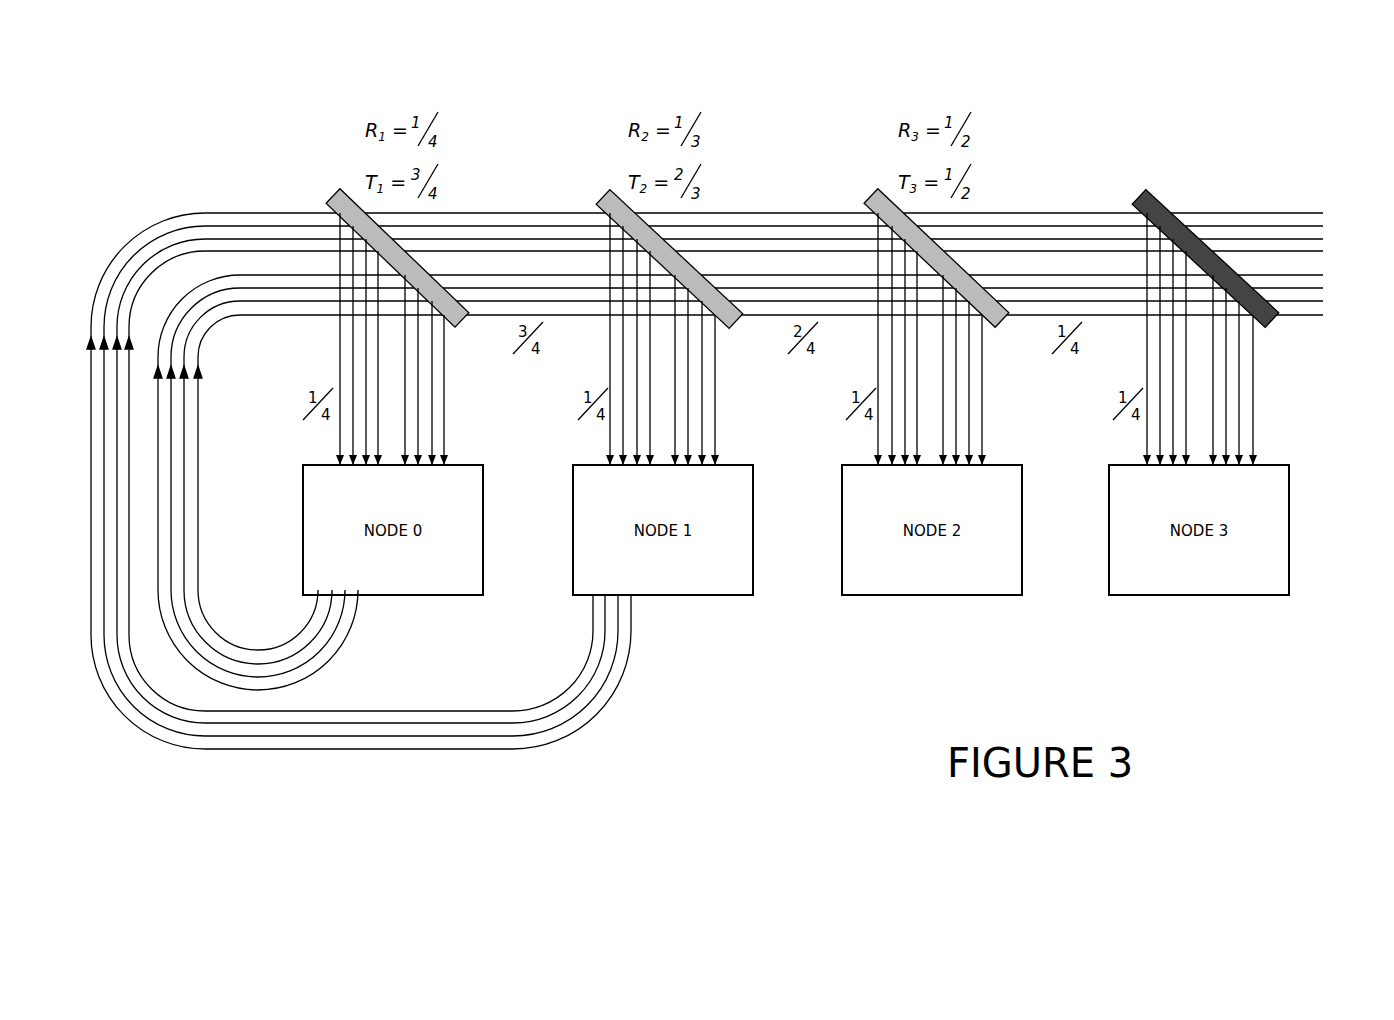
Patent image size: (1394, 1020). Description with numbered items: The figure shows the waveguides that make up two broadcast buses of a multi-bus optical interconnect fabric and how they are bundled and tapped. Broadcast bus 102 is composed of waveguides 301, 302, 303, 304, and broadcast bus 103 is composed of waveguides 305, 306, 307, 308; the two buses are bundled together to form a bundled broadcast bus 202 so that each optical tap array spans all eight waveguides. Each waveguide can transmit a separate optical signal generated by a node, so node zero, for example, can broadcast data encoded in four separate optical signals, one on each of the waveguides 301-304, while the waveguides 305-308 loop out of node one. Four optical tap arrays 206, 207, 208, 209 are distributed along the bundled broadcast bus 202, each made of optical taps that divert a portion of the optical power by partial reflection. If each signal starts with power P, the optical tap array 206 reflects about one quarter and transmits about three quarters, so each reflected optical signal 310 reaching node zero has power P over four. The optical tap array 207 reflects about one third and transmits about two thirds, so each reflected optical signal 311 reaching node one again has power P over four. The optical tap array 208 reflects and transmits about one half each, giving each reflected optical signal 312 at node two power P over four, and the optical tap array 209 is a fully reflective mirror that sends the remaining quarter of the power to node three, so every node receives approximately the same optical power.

The broadcast bus 102 is at (368, 633).
The broadcast bus 103 is at (636, 705).
The bundled broadcast bus 202 is at (1330, 213).
The optical tap array 206 is at (330, 198).
The optical tap array 207 is at (600, 198).
The optical tap array 208 is at (870, 198).
The optical tap array 209 is at (1137, 196).
The waveguide 301 is at (305, 628).
The waveguide 302 is at (227, 655).
The waveguide 303 is at (282, 672).
The waveguide 304 is at (332, 657).
The waveguide 305 is at (563, 688).
The waveguide 306 is at (477, 724).
The waveguide 307 is at (497, 737).
The waveguide 308 is at (570, 733).
The optical signal 310 is at (353, 359).
The optical signal 311 is at (623, 380).
The optical signal 312 is at (892, 380).